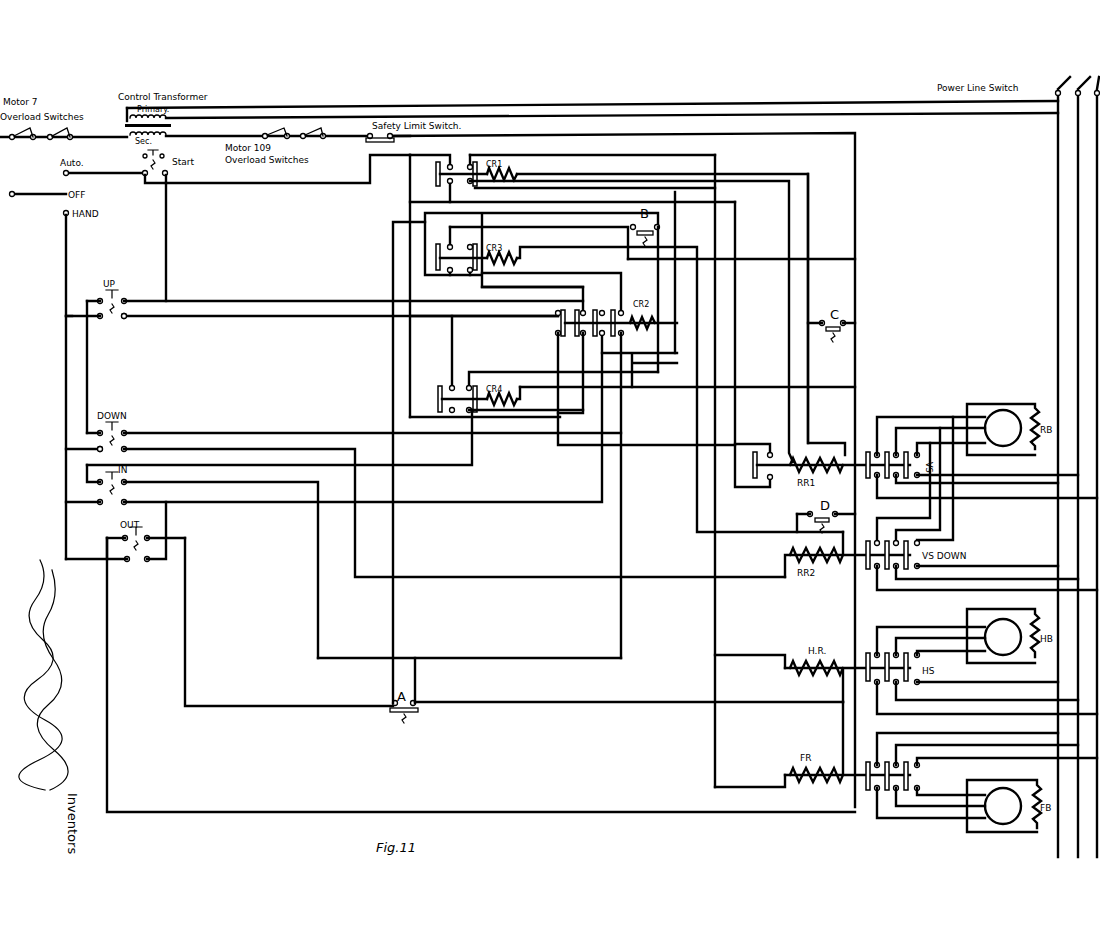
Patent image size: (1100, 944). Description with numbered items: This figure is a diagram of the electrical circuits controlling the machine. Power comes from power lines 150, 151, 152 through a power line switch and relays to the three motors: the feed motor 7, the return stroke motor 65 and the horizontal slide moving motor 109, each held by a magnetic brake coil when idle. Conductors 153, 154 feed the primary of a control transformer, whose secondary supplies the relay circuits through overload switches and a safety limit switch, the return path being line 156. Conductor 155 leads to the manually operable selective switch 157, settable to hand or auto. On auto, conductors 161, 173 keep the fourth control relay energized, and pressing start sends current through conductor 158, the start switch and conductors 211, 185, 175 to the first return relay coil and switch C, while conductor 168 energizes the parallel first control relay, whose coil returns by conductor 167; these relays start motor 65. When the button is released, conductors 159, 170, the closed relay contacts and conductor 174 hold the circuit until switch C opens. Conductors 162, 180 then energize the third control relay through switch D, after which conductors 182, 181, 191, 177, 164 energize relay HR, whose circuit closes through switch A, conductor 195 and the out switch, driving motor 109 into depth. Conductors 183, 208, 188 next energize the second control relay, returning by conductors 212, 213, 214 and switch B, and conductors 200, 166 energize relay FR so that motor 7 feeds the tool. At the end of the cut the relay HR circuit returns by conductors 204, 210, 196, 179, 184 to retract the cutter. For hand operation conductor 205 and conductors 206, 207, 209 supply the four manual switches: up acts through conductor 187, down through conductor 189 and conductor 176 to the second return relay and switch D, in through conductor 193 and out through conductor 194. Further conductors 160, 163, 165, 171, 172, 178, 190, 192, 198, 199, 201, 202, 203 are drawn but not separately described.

The feed motor 7 is at (1004, 806).
The return stroke motor 65 is at (1003, 429).
The horizontal slide moving motor 109 is at (1003, 636).
The power line 150 is at (1058, 152).
The power line 151 is at (1078, 177).
The power line 152 is at (1097, 201).
The conductor 153 is at (718, 93).
The conductor 154 is at (718, 111).
The conductor 155 is at (63, 148).
The conductor (line) 156 is at (718, 129).
The manually operable selective switch 157 is at (22, 200).
The conductor 158 is at (92, 176).
The conductor 159 is at (325, 176).
The conductor 160 is at (410, 179).
The conductor 161 is at (412, 359).
The conductor 162 is at (515, 409).
The conductor 163 is at (422, 155).
The conductor 164 is at (532, 156).
The conductor to head relay 165 is at (734, 647).
The conductor 166 is at (713, 765).
The conductor 167 is at (732, 168).
The conductor 168 is at (780, 201).
The conductor 170 is at (740, 211).
The conductor 171 is at (810, 218).
The limit switch C 172 is at (818, 313).
The conductor 173 is at (814, 378).
The conductor 174 is at (784, 437).
The conductor 175 is at (645, 434).
The conductor 176 is at (697, 358).
The conductor 177 is at (677, 235).
The conductor 178 is at (658, 268).
The conductor 179 is at (522, 271).
The conductor 180 is at (493, 285).
The conductor 181 is at (486, 300).
The conductor 182 is at (454, 342).
The conductor 183 is at (322, 298).
The conductor 184 is at (391, 240).
The conductor 185 is at (326, 316).
The conductor 187 is at (130, 318).
The conductor 188 is at (296, 426).
The conductor 189 is at (299, 443).
The conductor 190 is at (412, 453).
The conductor 191 is at (418, 490).
The conductor 192 is at (258, 474).
The conductor 193 is at (214, 500).
The conductor 194 is at (170, 527).
The conductor 195 is at (188, 596).
The conductor 196 is at (488, 648).
The conductor 198 is at (502, 358).
The conductor 199 is at (678, 194).
The conductor 200 is at (617, 373).
The conductor 201 is at (495, 812).
The limit switch D 202 is at (860, 499).
The conductor 203 is at (791, 525).
The conductor 204 is at (494, 692).
The conductor 205 is at (66, 532).
The conductor 206 is at (78, 510).
The conductor 207 is at (72, 452).
The conductor 208 is at (89, 349).
The conductor 209 is at (72, 314).
The conductor 210 is at (417, 681).
The conductor 211 is at (168, 243).
The conductor 212 is at (428, 278).
The conductor 213 is at (538, 236).
The conductor 214 is at (742, 254).